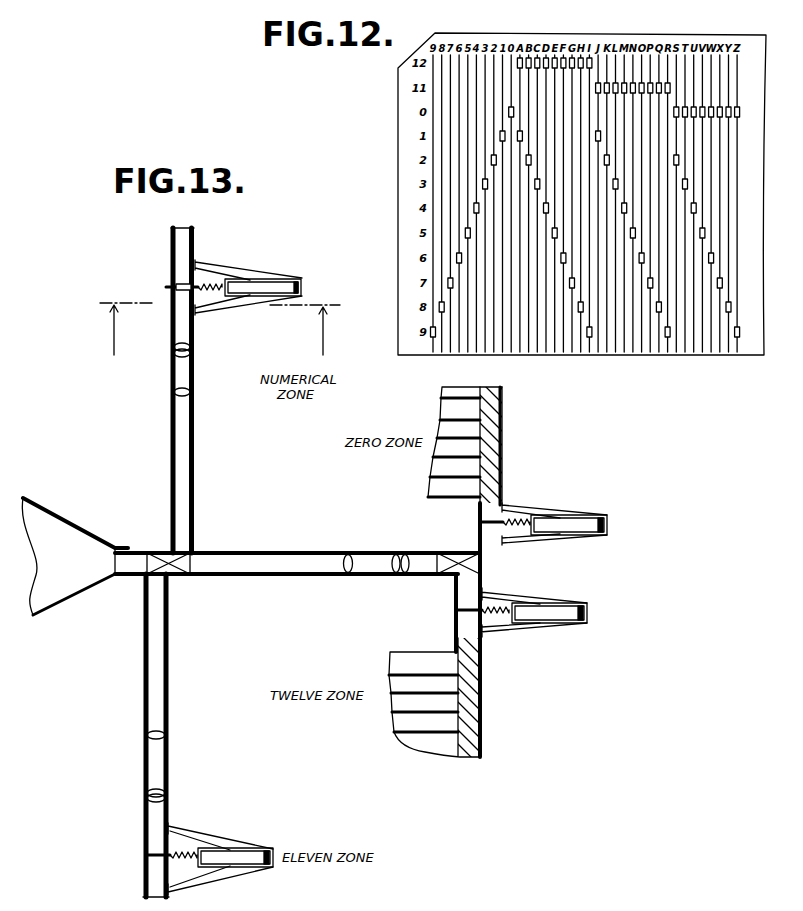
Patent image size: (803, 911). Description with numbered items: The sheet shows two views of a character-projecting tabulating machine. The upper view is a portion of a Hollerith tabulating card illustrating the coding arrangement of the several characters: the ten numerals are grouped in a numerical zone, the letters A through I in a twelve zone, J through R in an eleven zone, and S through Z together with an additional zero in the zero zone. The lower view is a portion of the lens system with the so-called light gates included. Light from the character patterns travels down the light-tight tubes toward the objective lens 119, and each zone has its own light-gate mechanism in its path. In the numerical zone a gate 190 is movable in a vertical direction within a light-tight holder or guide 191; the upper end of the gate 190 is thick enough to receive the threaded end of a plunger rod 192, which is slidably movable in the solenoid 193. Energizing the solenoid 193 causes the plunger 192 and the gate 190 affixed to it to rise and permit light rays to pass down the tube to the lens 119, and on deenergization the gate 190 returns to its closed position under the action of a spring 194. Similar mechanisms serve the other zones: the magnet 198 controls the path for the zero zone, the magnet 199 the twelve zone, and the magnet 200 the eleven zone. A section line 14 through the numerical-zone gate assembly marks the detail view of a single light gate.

The section line 14- 14 is at (220, 322).
The objective lens 119 is at (186, 375).
The gate 190 is at (186, 282).
The light-tight holder or guide 191 is at (180, 291).
The plunger rod 192 is at (212, 287).
The solenoid 193 is at (282, 290).
The spring 194 is at (212, 300).
The magnet 198 is at (585, 525).
The magnet 199 is at (560, 612).
The magnet 200 is at (236, 850).